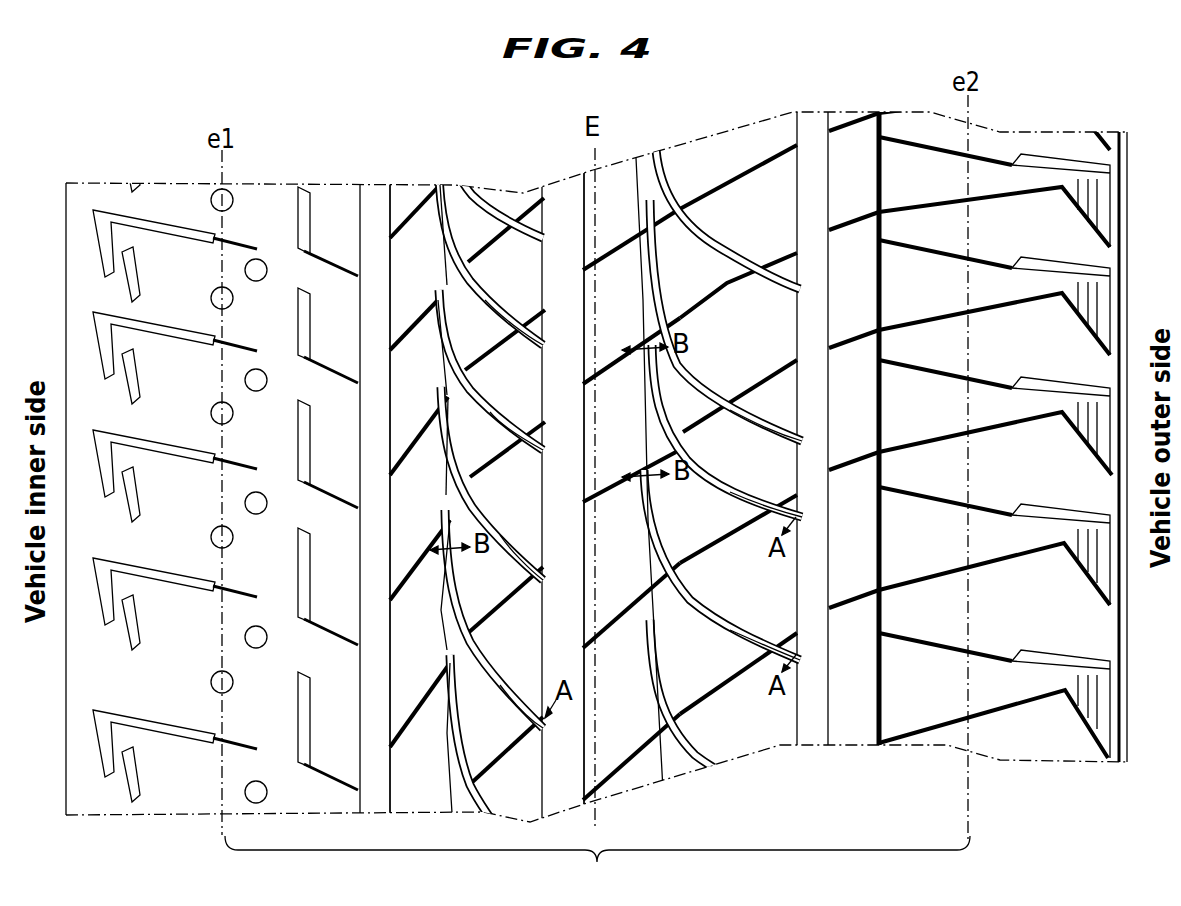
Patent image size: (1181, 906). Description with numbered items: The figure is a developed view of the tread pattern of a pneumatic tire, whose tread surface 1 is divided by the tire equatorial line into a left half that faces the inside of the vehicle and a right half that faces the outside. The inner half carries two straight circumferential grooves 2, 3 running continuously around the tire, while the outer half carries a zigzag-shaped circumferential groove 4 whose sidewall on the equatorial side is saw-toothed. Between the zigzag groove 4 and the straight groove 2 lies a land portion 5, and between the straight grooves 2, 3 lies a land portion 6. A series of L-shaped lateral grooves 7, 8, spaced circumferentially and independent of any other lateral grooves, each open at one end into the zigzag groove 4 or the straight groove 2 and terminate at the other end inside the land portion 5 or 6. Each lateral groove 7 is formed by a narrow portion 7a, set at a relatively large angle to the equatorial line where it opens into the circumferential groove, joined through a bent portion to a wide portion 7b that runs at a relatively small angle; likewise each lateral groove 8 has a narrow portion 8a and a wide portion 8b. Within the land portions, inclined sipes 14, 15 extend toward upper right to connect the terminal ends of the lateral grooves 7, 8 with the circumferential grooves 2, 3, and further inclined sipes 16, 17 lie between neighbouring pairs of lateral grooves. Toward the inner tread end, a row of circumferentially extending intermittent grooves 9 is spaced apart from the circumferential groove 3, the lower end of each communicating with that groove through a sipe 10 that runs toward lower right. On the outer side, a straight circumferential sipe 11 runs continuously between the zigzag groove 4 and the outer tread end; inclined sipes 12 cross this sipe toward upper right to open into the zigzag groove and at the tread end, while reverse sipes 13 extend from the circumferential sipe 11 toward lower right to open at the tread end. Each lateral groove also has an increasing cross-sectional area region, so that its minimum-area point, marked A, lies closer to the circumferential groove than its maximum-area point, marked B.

The tread surface 1 is at (597, 865).
The circumferential groove 2 is at (562, 471).
The circumferential groove 3 is at (375, 466).
The zigzag-shaped circumferential groove 4 is at (812, 400).
The land portion 5 is at (637, 439).
The land portion 6 is at (404, 465).
The lateral groove 7 is at (723, 476).
The narrow portion 7a is at (766, 535).
The wide portion 7b is at (635, 474).
The lateral groove 8 is at (491, 480).
The narrow portion 8a is at (507, 514).
The wide portion 8b is at (447, 499).
The intermittent groove 9 is at (310, 488).
The sipe 10 is at (331, 536).
The circumferential sipe 11 is at (861, 429).
The inclined sipe 12 is at (970, 424).
The reverse sipe 13 is at (994, 447).
The inclined sipe 14 is at (631, 505).
The inclined sipe 15 is at (420, 466).
The inclined sipe 16 is at (737, 429).
The inclined sipe 17 is at (521, 492).